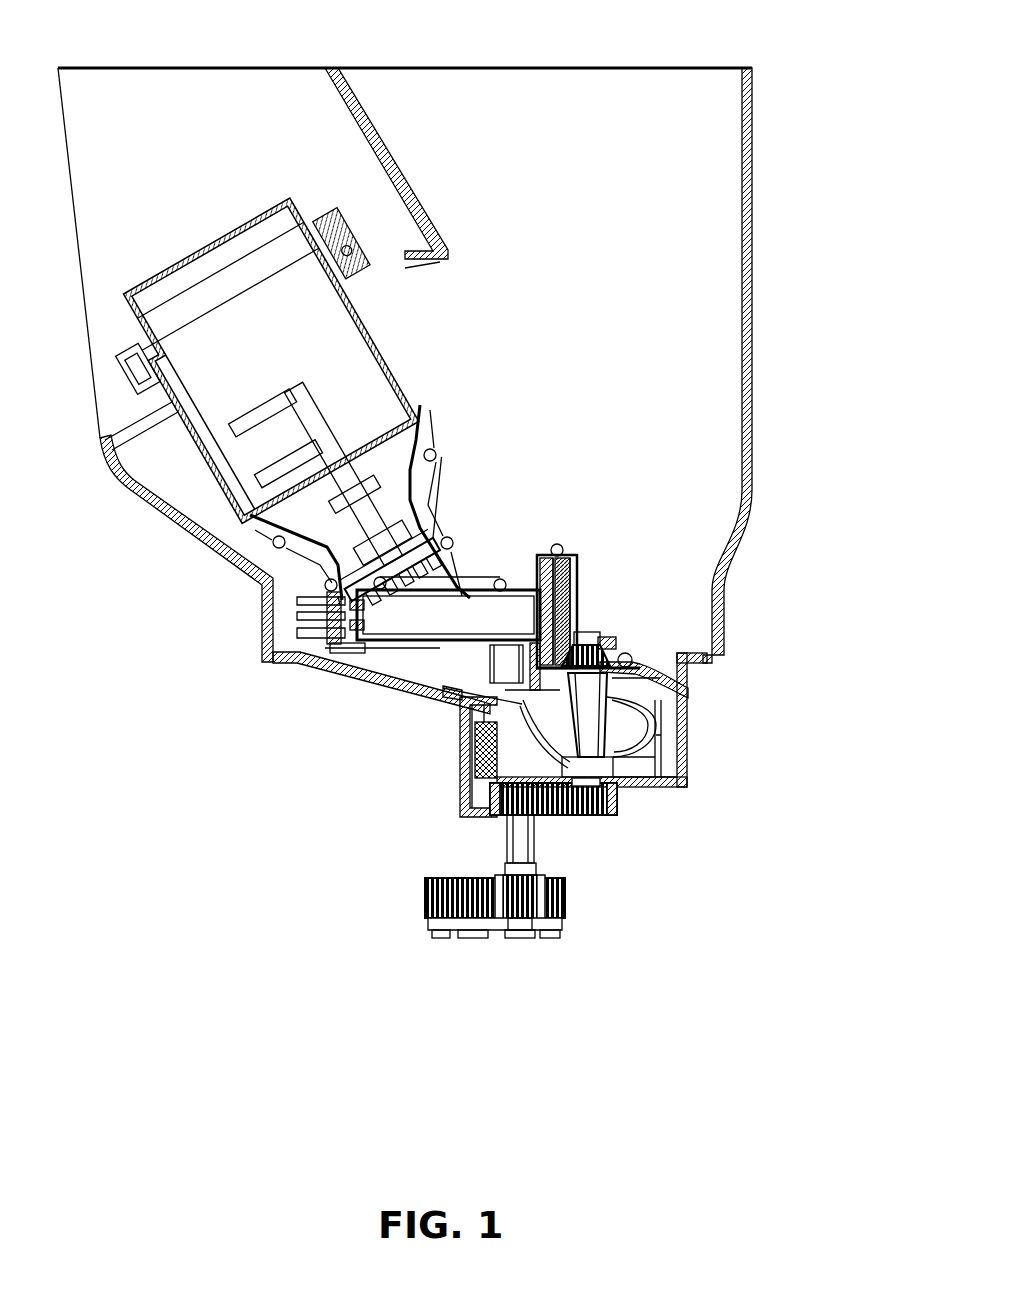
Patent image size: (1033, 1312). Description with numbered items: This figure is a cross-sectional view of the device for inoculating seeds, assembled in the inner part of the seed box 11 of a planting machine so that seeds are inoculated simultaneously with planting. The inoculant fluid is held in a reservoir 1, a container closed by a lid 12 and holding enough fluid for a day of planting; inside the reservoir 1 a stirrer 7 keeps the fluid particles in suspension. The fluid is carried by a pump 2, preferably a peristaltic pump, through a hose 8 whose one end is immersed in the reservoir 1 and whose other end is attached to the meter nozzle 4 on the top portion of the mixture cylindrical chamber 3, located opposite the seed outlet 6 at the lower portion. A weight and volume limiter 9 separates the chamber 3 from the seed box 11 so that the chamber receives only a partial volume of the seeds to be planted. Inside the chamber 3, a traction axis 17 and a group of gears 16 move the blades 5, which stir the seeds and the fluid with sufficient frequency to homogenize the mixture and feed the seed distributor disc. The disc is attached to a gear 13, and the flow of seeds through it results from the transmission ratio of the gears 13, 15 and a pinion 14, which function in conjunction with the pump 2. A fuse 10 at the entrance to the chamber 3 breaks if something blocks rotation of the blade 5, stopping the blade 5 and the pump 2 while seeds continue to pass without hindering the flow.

The reservoir 1 is at (432, 398).
The pump 2 is at (345, 628).
The mixture cylindrical chamber 3 is at (658, 730).
The meter nozzle 4 is at (517, 705).
The blades 5 is at (627, 719).
The seed outlet 6 is at (640, 770).
The stirrer 7 is at (318, 416).
The hose 8 is at (346, 647).
The weight and volume limiter 9 is at (642, 670).
The fuse 10 is at (606, 628).
The seed box 11 is at (602, 140).
The lid 12 is at (236, 219).
The gear 13 is at (562, 920).
The pinion 14 is at (530, 833).
The gear 15 is at (617, 815).
The group of gears 16 is at (585, 624).
The traction axis 17 is at (434, 618).